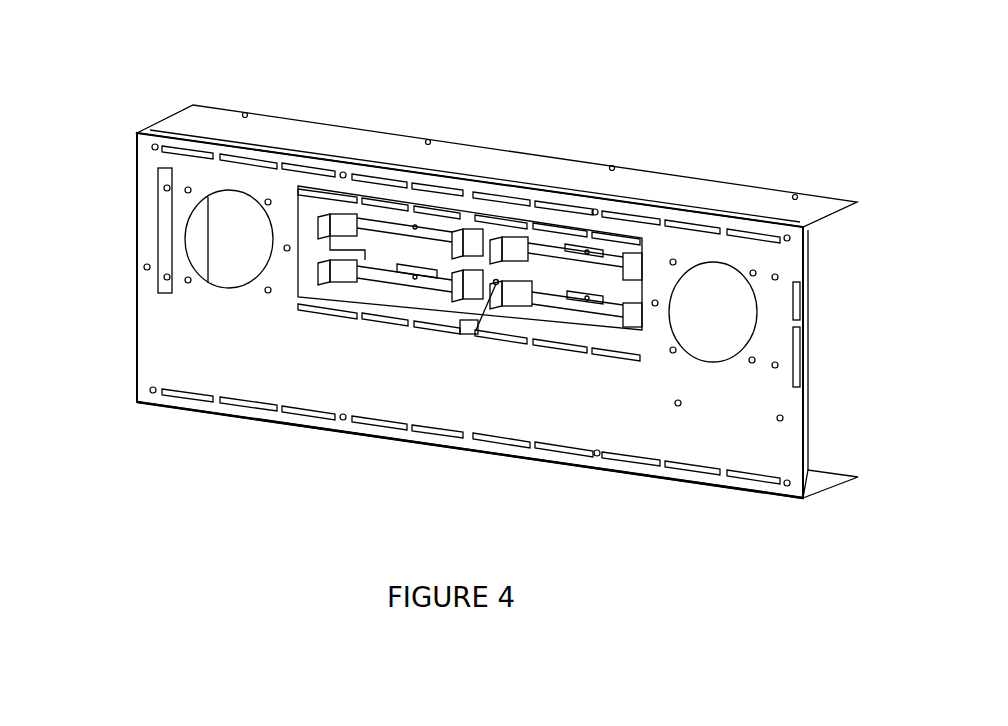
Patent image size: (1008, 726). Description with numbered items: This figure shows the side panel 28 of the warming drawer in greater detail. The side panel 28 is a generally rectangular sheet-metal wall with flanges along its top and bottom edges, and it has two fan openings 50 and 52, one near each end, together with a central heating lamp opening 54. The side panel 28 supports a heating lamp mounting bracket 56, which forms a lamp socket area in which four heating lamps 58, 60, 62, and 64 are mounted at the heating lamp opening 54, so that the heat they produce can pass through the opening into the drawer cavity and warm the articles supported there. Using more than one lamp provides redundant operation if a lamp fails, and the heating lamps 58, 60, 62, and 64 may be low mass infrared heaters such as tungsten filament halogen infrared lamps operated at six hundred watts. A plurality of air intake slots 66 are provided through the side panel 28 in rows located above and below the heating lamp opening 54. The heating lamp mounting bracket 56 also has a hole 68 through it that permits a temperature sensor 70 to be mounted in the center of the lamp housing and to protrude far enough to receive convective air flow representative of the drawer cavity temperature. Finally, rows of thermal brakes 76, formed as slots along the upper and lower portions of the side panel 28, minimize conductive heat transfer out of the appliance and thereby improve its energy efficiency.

The side panel 28 is at (653, 192).
The fan opening 50 is at (708, 305).
The fan opening 52 is at (242, 267).
The heating lamp opening 54 is at (310, 237).
The heating lamp mounting bracket 56 is at (332, 218).
The heating lamp 58 is at (390, 232).
The heating lamp 60 is at (412, 277).
The heating lamp 62 is at (560, 300).
The heating lamp 64 is at (600, 260).
The air intake slots 66 is at (360, 203).
The hole 68 is at (458, 333).
The temperature sensor 70 is at (476, 330).
The thermal brakes 76 is at (740, 233).